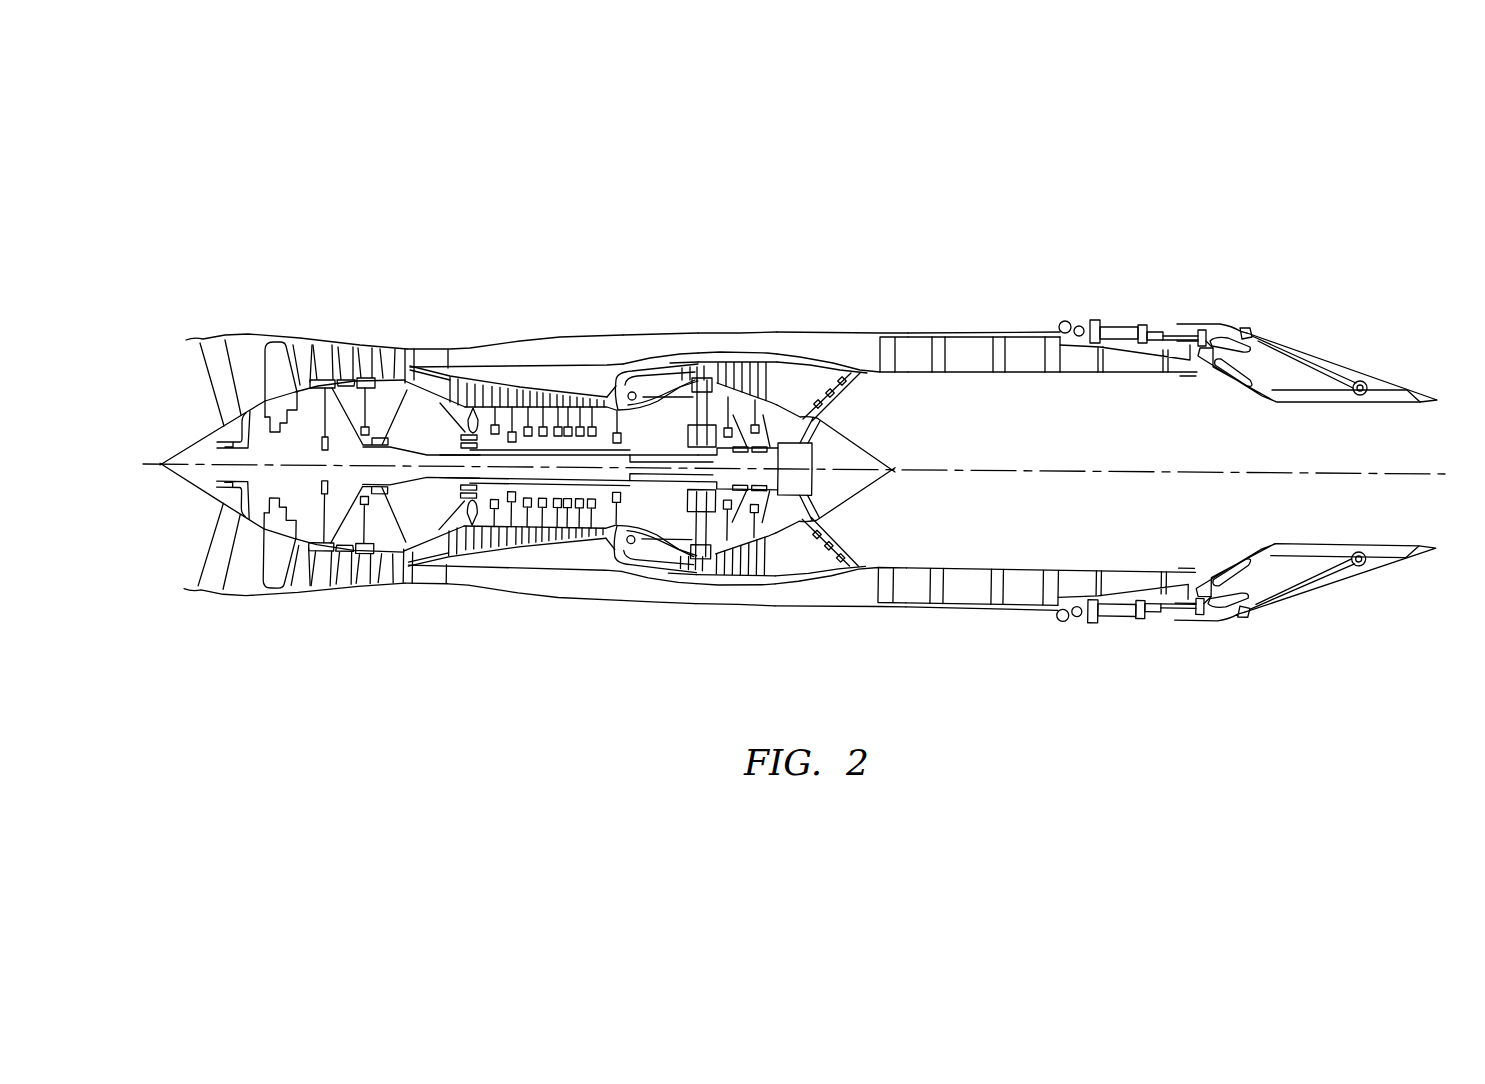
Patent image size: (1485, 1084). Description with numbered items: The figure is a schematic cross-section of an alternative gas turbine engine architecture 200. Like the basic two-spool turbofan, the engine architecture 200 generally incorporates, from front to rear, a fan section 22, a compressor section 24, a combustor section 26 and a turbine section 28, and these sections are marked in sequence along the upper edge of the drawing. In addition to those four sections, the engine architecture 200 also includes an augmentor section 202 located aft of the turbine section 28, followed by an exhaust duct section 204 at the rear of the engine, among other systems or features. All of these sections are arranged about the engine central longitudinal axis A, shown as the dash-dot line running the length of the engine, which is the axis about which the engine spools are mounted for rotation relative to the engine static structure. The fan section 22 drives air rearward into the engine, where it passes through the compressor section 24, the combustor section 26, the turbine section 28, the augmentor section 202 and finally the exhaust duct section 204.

The engine architecture 200 is at (798, 364).
The fan section 22 is at (407, 268).
The compressor section 24 is at (623, 268).
The combustor section 26 is at (698, 268).
The turbine section 28 is at (777, 268).
The augmentor section 202 is at (777, 268).
The exhaust duct section 204 is at (908, 268).
The engine central longitudinal axis A is at (1188, 477).